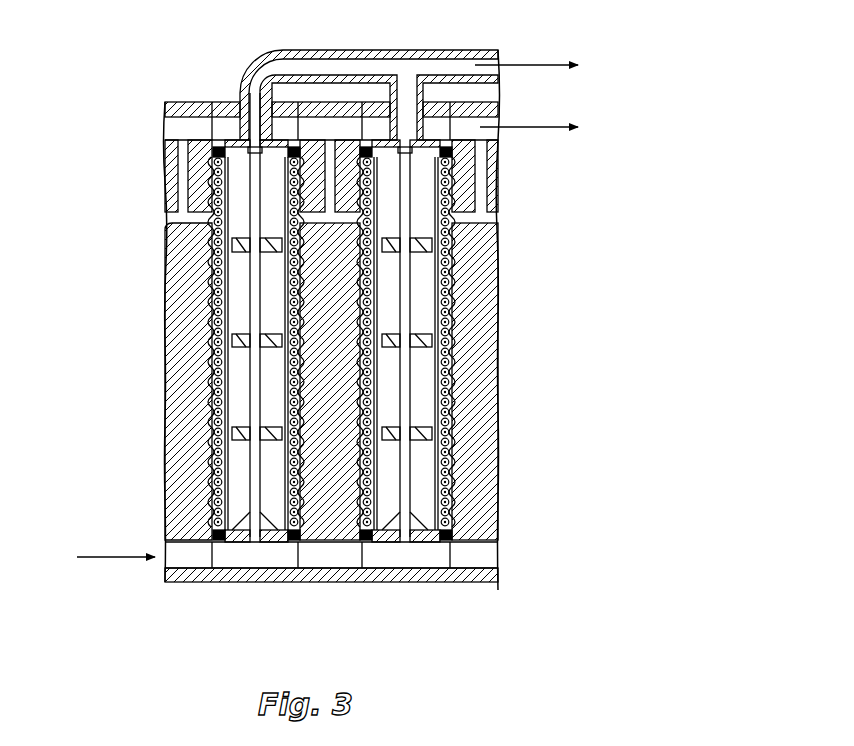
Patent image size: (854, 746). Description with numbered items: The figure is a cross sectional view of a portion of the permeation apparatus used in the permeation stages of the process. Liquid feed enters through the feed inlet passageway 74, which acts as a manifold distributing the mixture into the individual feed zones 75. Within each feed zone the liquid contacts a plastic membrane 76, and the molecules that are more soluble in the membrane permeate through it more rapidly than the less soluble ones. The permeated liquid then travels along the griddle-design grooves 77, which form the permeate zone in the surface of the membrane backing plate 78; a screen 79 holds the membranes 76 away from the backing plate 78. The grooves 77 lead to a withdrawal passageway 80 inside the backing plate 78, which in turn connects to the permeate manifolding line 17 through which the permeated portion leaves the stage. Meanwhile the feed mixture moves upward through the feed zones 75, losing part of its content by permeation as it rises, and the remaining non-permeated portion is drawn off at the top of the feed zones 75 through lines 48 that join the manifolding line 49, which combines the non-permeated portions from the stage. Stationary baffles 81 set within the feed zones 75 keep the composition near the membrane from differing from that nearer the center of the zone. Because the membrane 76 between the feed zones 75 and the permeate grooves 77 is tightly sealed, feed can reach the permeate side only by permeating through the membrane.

The permeate manifolding line 17 is at (487, 130).
The lines 48 is at (240, 127).
The manifolding line 49 is at (358, 52).
The passageway 74 is at (173, 558).
The feed zones 75 is at (243, 200).
The plastic membrane 76 is at (230, 472).
The griddle-design grooves 77 is at (207, 260).
The membrane backing plate 78 is at (180, 300).
The screen 79 is at (207, 423).
The withdrawal passageway 80 is at (187, 217).
The stationary baffles 81 is at (240, 253).